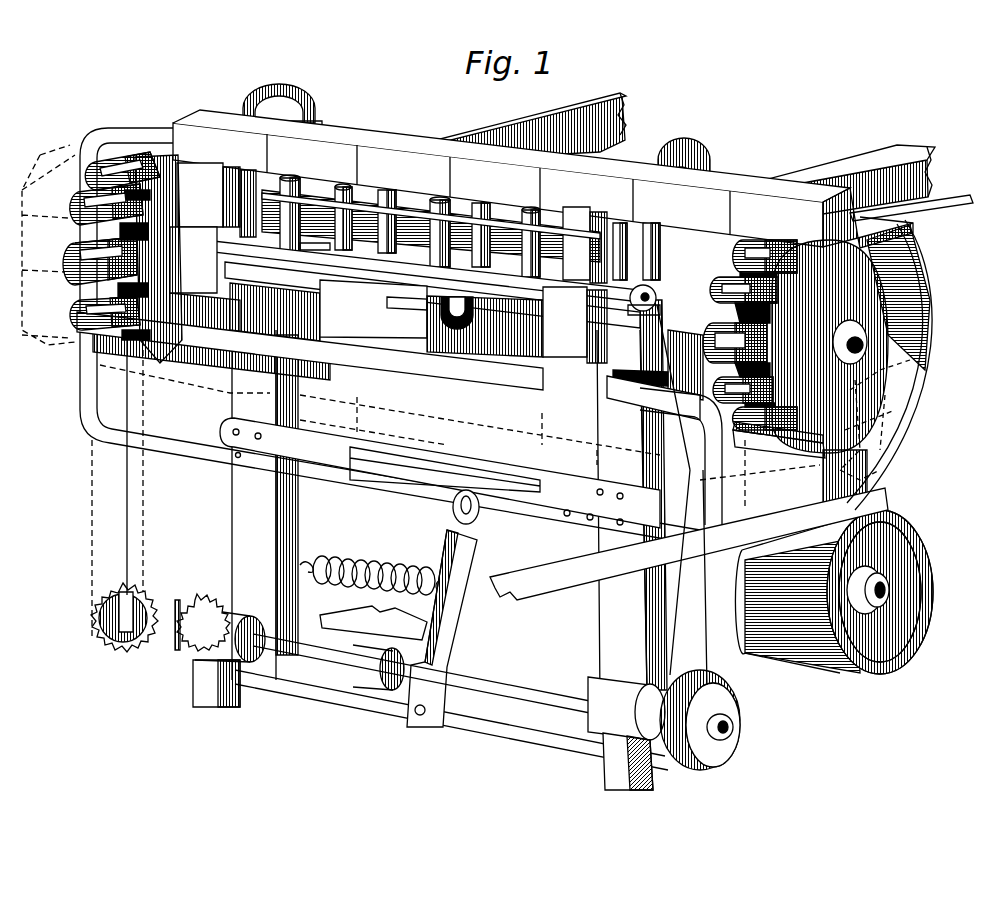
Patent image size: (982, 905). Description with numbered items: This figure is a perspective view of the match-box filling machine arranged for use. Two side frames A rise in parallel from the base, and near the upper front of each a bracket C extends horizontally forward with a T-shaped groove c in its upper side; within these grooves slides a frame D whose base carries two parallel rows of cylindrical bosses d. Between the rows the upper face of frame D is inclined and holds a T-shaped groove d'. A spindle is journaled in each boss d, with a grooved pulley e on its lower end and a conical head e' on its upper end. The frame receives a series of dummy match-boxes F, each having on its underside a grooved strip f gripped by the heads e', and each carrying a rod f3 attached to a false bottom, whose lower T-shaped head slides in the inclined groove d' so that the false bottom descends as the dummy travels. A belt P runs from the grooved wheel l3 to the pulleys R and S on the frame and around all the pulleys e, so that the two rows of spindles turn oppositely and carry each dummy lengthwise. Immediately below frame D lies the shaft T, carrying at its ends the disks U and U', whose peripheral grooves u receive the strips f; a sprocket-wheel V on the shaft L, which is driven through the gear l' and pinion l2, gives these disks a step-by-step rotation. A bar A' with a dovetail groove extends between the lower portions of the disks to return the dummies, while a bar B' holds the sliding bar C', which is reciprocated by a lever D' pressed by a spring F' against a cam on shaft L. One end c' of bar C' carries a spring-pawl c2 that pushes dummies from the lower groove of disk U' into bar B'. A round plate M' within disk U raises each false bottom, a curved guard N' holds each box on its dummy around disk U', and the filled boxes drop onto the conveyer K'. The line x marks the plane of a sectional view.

The side frame A is at (584, 427).
The bar A' is at (440, 461).
The bar B' is at (445, 450).
The bracket C is at (388, 364).
The bar C' is at (732, 456).
The T-shaped groove c is at (393, 250).
The end of bar C' c' is at (760, 475).
The spring-pawl c2 is at (845, 456).
The frame D is at (431, 314).
The lever D' is at (406, 608).
The cylindrical boss d is at (436, 223).
The T-shaped groove d' is at (431, 203).
The grooved pulley e is at (429, 263).
The conical head e' is at (470, 213).
The dummy match-box F is at (475, 269).
The spring F' is at (372, 563).
The strip f is at (340, 188).
The rod f3 is at (426, 196).
The conveyer K' is at (689, 544).
The shaft L is at (548, 688).
The gear l' is at (229, 638).
The pinion l2 is at (195, 593).
The grooved wheel l3 is at (695, 770).
The round plate M' is at (150, 234).
The curved guard N' is at (906, 363).
The belt P is at (715, 626).
The grooved pulley R is at (660, 297).
The pulley S is at (214, 268).
The shaft T is at (378, 300).
The disk U is at (82, 258).
The disk U' is at (867, 339).
The groove u is at (75, 235).
The sprocket-wheel V is at (95, 633).
The section line x is at (92, 554).